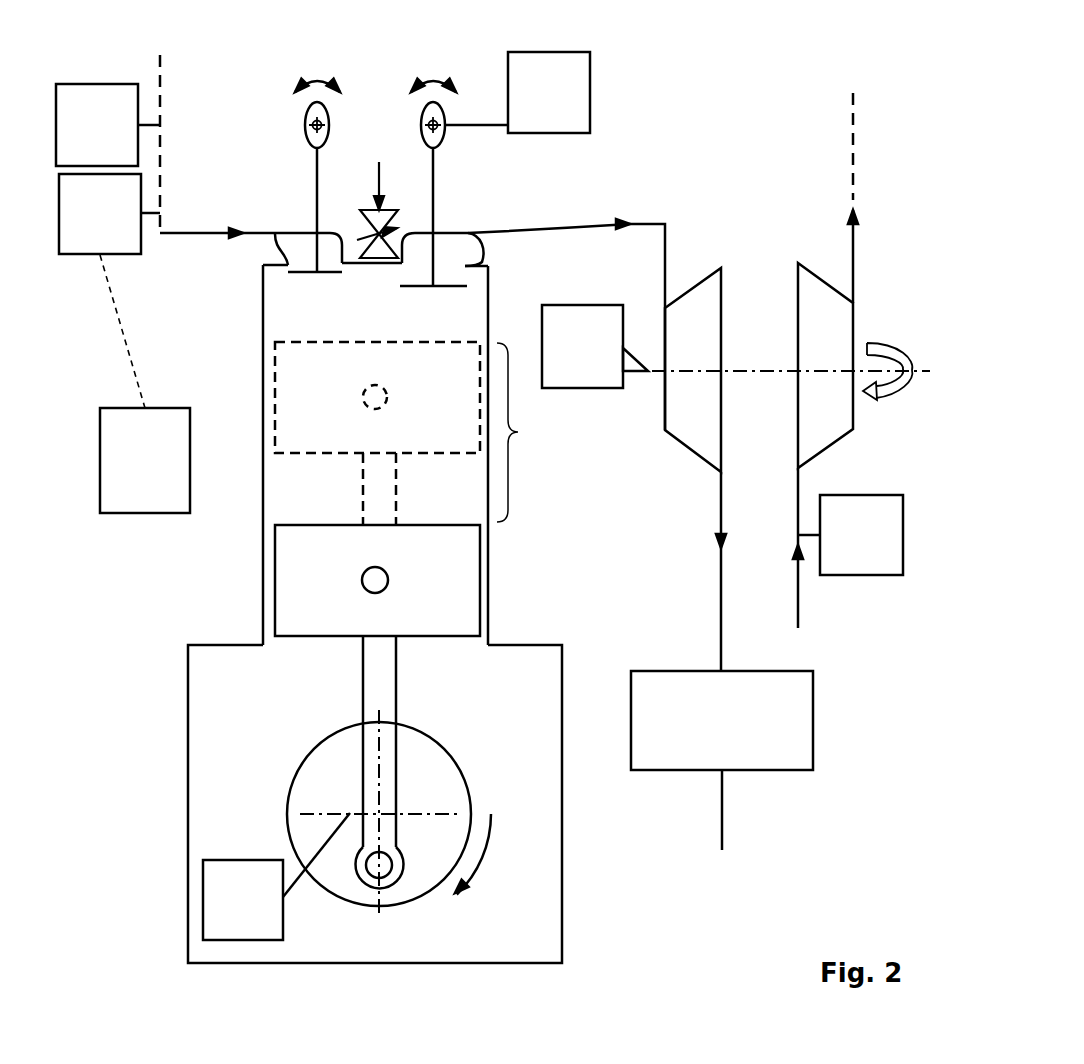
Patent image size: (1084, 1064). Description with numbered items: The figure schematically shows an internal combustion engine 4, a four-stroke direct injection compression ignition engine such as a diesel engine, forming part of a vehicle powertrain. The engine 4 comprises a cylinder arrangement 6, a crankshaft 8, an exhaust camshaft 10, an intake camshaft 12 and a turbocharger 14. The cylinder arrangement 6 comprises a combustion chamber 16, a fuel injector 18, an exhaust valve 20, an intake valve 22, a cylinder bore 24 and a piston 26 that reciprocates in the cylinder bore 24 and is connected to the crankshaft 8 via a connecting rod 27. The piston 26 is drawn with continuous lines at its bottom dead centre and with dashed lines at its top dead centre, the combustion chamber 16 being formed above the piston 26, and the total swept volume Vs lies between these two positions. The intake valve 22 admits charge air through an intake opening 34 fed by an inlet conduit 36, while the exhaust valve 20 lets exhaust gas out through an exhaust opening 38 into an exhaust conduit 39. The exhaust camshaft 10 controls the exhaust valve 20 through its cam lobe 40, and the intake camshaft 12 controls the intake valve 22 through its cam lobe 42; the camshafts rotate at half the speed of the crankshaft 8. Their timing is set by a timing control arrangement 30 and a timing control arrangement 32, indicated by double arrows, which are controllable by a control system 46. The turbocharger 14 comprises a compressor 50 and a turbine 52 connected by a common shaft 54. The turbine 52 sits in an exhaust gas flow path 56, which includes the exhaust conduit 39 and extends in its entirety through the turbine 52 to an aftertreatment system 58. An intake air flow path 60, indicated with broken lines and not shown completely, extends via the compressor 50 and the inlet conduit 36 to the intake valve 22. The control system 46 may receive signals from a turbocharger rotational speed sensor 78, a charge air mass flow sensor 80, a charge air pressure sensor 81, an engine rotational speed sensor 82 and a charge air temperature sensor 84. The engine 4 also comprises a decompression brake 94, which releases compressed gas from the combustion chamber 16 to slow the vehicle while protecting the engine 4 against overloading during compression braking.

The internal combustion engine 4 is at (693, 90).
The cylinder arrangement 6 is at (560, 404).
The crankshaft 8 is at (450, 777).
The exhaust camshaft 10 is at (447, 120).
The intake camshaft 12 is at (330, 115).
The turbocharger 14 is at (743, 252).
The combustion chamber 16 is at (320, 323).
The fuel injector 18 is at (375, 220).
The exhaust valve 20 is at (437, 184).
The intake valve 22 is at (317, 195).
The cylinder bore 24 is at (489, 584).
The piston 26 is at (452, 412).
The connecting rod 27 is at (388, 678).
The timing control arrangement 30 is at (437, 80).
The timing control arrangement 32 is at (318, 80).
The intake opening 34 is at (340, 262).
The inlet conduit 36 is at (217, 237).
The exhaust opening 38 is at (420, 263).
The exhaust conduit 39 is at (595, 227).
The cam lobe 40 is at (440, 137).
The cam lobe 42 is at (310, 110).
The control system 46 is at (128, 475).
The compressor 50 is at (817, 427).
The turbine 52 is at (710, 443).
The common shaft 54 is at (785, 372).
The exhaust gas flow path 56 is at (665, 548).
The aftertreatment system 58 is at (705, 735).
The intake air flow path 60 is at (173, 137).
The turbocharger rotational speed sensor 78 is at (566, 362).
The charge air mass flow sensor 80 is at (845, 550).
The charge air pressure sensor 81 is at (83, 229).
The engine rotational speed sensor 82 is at (226, 915).
The charge air temperature sensor 84 is at (80, 140).
The decompression brake 94 is at (532, 108).